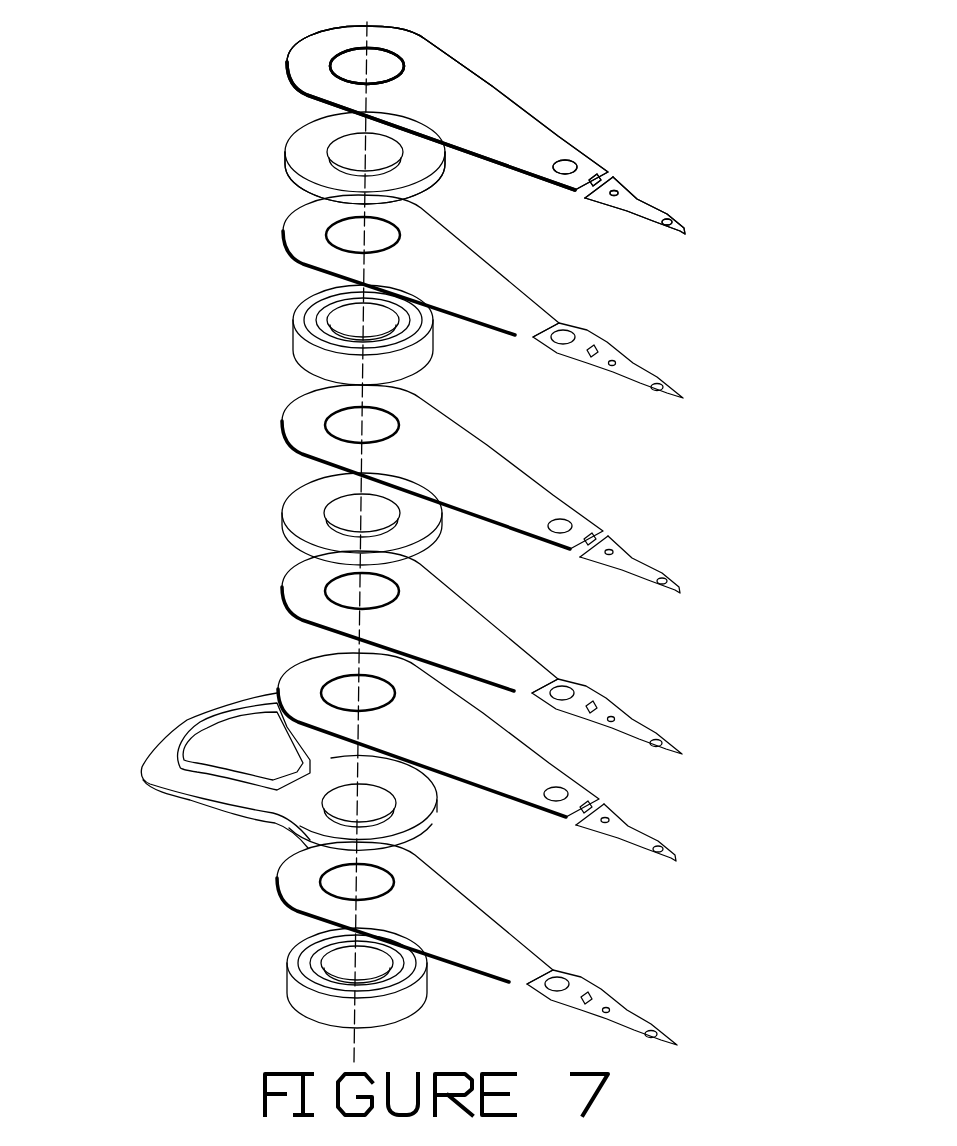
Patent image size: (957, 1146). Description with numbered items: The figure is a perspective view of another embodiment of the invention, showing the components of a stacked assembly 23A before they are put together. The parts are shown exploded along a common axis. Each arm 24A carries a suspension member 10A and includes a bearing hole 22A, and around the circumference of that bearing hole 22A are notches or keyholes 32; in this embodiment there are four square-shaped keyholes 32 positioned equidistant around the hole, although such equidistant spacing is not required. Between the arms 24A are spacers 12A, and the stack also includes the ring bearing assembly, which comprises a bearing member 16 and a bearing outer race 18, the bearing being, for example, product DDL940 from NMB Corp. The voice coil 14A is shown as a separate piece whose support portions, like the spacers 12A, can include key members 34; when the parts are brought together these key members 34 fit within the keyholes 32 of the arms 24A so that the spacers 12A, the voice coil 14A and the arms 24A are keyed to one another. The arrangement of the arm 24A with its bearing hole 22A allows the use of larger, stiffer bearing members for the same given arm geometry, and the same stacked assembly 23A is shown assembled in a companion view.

The suspension member 10A is at (496, 140).
The spacer 12A is at (302, 140).
The voice coil 14A is at (173, 782).
The bearing member 16 is at (410, 352).
The bearing outer race 18 is at (397, 1003).
The bearing hole 22A is at (383, 56).
The stacked assembly 23A is at (737, 348).
The arm 24A is at (540, 143).
The keyhole 32 is at (404, 61).
The key member 34 is at (298, 160).